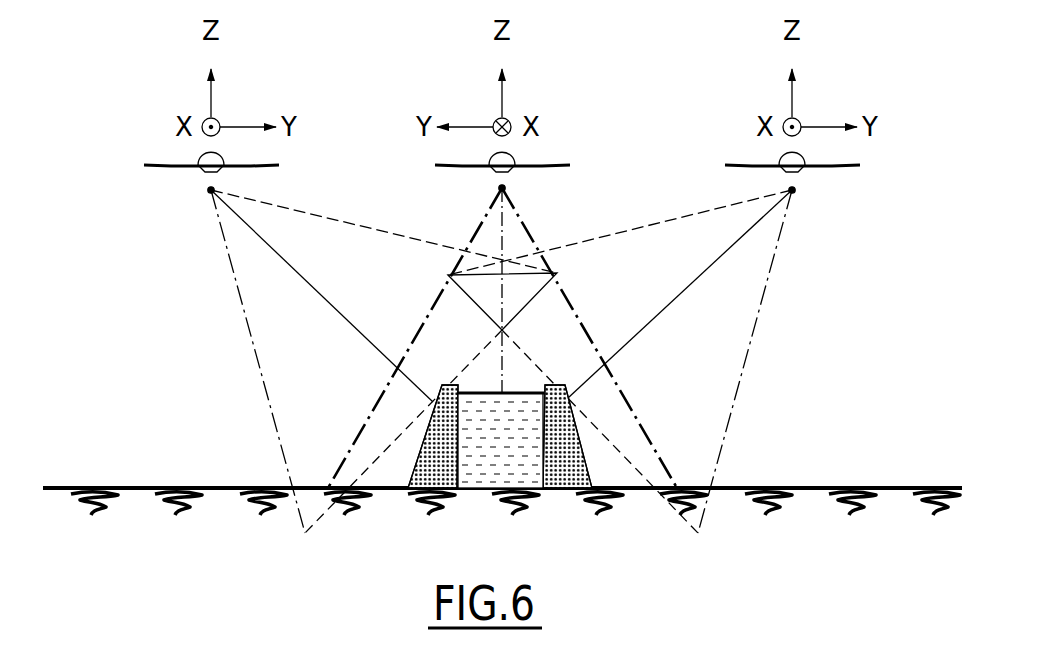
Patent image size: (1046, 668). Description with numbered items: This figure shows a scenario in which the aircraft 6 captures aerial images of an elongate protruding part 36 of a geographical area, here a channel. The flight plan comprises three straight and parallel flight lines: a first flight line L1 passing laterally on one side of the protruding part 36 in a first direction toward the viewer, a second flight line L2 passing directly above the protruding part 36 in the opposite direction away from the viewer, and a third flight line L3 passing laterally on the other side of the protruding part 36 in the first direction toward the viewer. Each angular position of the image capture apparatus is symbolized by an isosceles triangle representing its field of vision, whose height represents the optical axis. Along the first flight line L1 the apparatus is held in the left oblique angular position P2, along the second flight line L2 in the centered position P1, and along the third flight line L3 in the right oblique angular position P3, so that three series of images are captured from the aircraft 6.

The aircraft 6 is at (155, 175).
The elongate protruding part 36 is at (400, 488).
The first flight line L1 is at (203, 181).
The second flight line L2 is at (508, 189).
The third flight line L3 is at (798, 190).
The centered angular position P1 is at (590, 327).
The left oblique angular position P2 is at (248, 337).
The right oblique angular position P3 is at (750, 362).